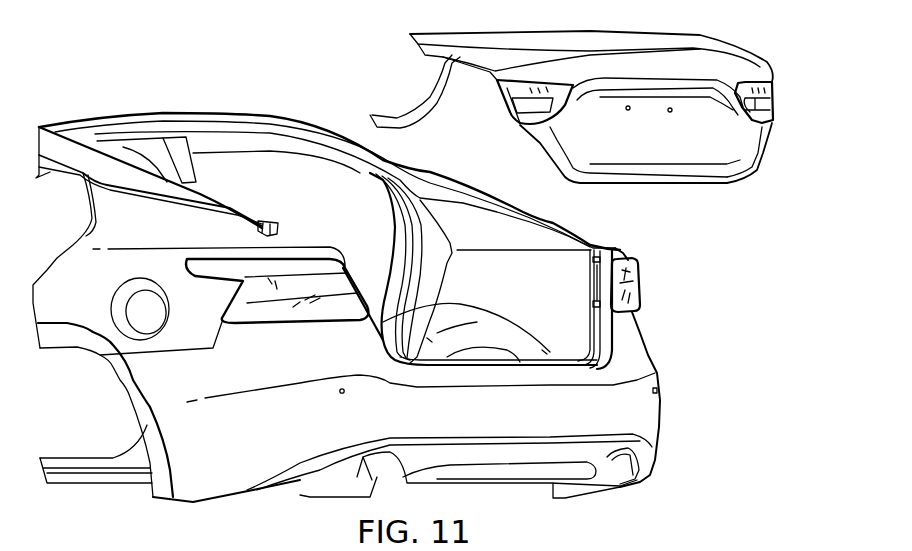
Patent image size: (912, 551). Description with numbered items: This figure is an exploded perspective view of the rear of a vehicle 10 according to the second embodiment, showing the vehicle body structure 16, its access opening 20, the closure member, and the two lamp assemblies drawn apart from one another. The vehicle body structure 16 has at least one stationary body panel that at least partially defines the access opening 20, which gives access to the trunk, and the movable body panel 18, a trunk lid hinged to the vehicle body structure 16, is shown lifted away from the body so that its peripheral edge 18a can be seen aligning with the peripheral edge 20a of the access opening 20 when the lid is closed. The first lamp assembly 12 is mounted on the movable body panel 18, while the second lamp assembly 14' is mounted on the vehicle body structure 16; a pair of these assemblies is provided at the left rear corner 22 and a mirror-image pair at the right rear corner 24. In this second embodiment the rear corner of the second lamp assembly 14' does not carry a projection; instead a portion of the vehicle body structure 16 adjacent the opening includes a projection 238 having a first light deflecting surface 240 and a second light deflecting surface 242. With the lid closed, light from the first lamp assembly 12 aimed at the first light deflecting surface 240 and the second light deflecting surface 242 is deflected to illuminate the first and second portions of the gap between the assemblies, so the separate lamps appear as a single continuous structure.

The vehicle 10 is at (170, 38).
The first lamp assembly 12 is at (527, 81).
The second lamp assembly 14' is at (470, 230).
The vehicle body structure 16 is at (143, 115).
The movable body panel 18 is at (766, 155).
The peripheral edge 18a is at (527, 137).
The access opening 20 is at (568, 362).
The peripheral edge 20a is at (437, 308).
The left rear corner 22 is at (265, 325).
The right rear corner 24 is at (641, 288).
The projection 238 is at (598, 284).
The first light deflecting surface 240 is at (596, 262).
The second light deflecting surface 242 is at (597, 310).